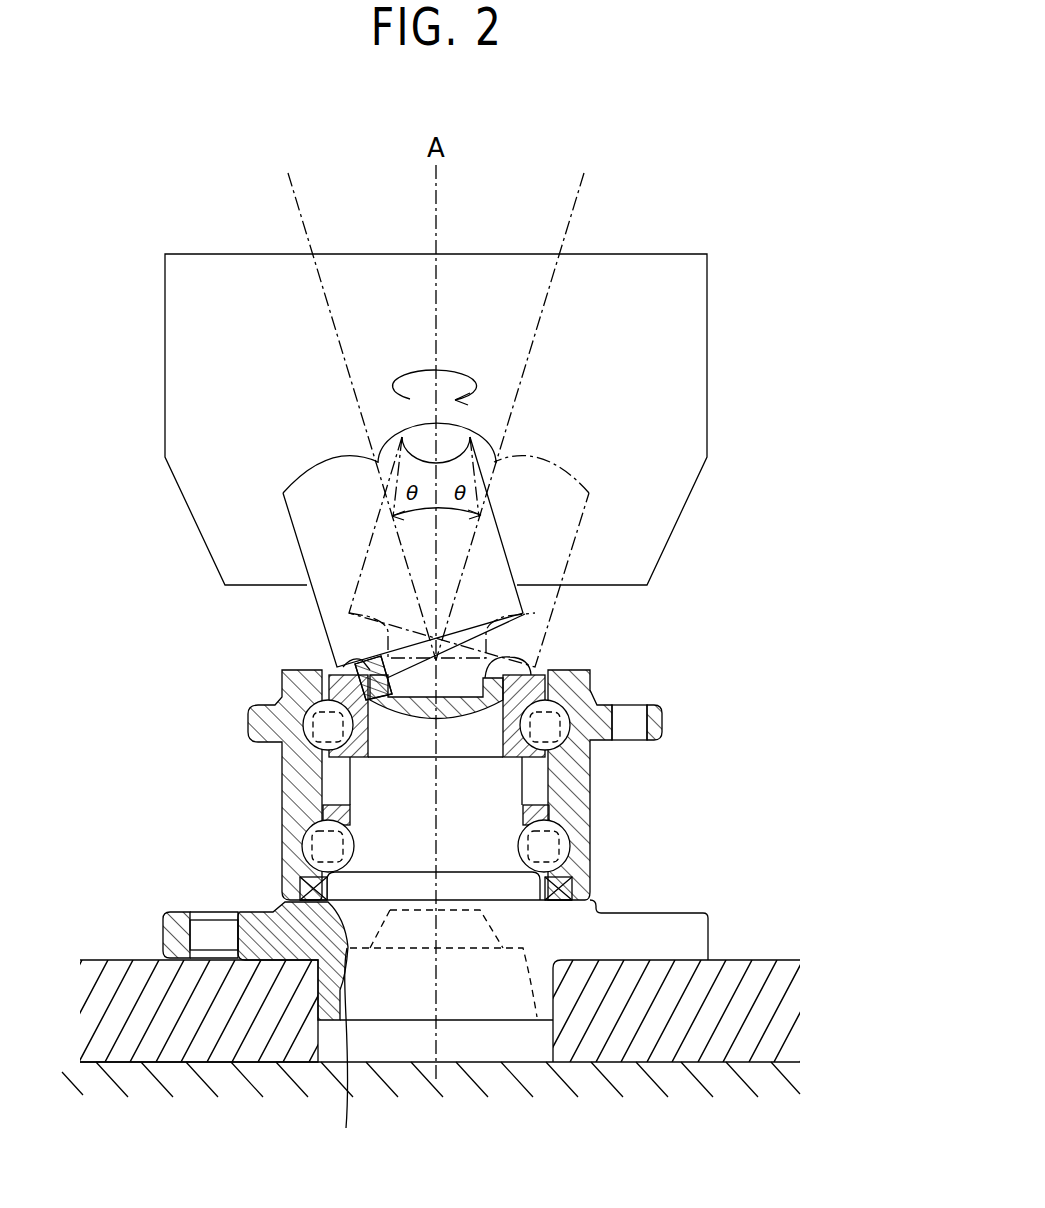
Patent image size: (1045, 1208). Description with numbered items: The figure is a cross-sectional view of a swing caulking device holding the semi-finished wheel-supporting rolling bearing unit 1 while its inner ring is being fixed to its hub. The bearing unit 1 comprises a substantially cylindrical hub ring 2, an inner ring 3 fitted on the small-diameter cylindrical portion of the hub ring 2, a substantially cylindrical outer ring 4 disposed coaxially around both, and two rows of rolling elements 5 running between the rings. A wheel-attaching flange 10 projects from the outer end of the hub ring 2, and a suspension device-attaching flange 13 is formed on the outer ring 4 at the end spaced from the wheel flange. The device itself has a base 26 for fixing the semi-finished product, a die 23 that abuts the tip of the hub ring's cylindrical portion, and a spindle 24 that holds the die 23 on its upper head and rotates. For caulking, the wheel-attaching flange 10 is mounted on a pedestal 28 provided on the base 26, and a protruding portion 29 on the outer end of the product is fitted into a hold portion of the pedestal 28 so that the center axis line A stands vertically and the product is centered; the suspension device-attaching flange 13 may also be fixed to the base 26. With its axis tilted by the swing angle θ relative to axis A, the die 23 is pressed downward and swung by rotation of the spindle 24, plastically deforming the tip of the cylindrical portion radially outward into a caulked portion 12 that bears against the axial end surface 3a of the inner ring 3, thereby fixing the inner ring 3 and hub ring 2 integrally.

The wheel-supporting rolling bearing unit 1 is at (228, 813).
The hub ring 2 is at (323, 912).
The inner ring 3 is at (295, 688).
The axial end surface 3a is at (348, 678).
The outer ring 4 is at (300, 790).
The rolling elements 5 is at (318, 733).
The wheel-attaching flange 10 is at (178, 945).
The caulked portion 12 is at (352, 664).
The suspension device-attaching flange 13 is at (660, 718).
The die 23 is at (493, 572).
The spindle 24 is at (673, 388).
The base 26 is at (612, 1075).
The pedestal 28 is at (207, 1023).
The protruding portion 29 is at (349, 1054).